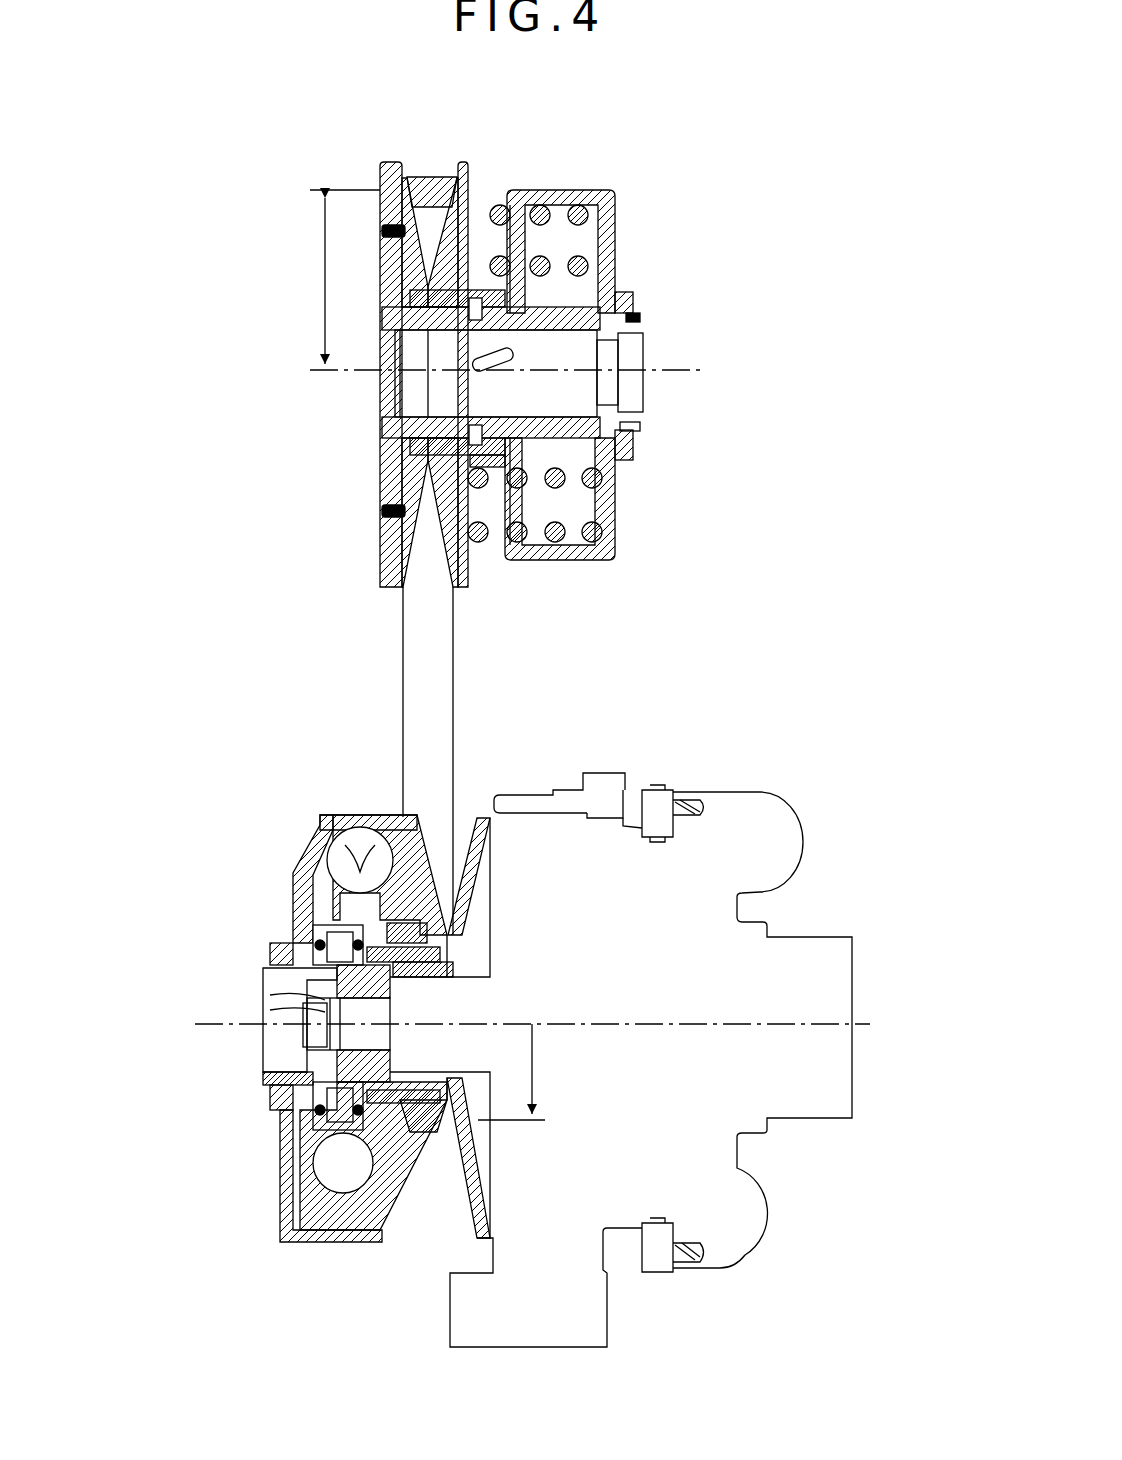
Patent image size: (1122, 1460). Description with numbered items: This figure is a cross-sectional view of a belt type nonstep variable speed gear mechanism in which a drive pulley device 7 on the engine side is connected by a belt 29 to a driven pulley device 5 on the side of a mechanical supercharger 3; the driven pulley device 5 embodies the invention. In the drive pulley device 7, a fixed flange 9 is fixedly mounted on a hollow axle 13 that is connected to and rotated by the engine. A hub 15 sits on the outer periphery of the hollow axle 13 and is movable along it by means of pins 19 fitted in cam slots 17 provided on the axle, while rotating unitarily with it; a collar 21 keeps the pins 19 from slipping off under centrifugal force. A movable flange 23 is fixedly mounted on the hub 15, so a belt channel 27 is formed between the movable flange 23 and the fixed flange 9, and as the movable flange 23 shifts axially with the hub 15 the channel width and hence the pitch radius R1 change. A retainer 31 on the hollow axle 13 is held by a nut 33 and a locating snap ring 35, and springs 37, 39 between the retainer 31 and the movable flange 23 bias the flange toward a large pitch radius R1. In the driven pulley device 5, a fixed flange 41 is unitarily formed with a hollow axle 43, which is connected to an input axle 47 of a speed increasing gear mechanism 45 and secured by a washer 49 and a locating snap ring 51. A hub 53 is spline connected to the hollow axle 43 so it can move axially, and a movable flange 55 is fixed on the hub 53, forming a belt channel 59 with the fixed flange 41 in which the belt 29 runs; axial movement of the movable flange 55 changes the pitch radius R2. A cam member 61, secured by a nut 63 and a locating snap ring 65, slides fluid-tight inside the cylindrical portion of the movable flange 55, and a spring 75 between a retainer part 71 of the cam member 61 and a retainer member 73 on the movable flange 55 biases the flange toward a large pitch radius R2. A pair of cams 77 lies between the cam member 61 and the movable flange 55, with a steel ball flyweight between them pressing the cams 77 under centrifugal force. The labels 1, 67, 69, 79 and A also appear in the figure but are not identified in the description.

The electromagnetic clutch (driving side) 1 is at (606, 349).
The supercharger 3 is at (651, 1017).
The driven pulley device 5 is at (356, 1045).
The drive pulley device 7 is at (400, 158).
The fixed flange 9 is at (386, 164).
The hollow axle 13 is at (562, 330).
The hub 15 is at (500, 430).
The cam slots 17 is at (480, 350).
The pins 19 is at (474, 426).
The collar 21 is at (506, 462).
The movable flange 23 is at (440, 205).
The belt channel 27 is at (450, 222).
The belt 29 is at (427, 180).
The retainer 31 is at (605, 200).
The nut 33 is at (627, 295).
The locating snap ring 35 is at (642, 318).
The spring 37 is at (540, 225).
The spring 39 is at (540, 274).
The fixed flange 41 is at (483, 810).
The hollow axle 43 is at (388, 985).
The speed increasing gear mechanism 45 is at (565, 775).
The input axle 47 is at (348, 1024).
The washer 49 is at (290, 996).
The locating snap ring 51 is at (290, 1026).
The hub 53 is at (392, 1075).
The movable flange 55 is at (396, 810).
The belt channel 59 is at (448, 1220).
The cam member 61 is at (300, 868).
The nut 63 is at (270, 1097).
The locating snap ring 65 is at (265, 1083).
The ball 67 is at (333, 1242).
The cover 69 is at (280, 1212).
The retainer part 71 is at (290, 945).
The retainer member 73 is at (430, 947).
The spring 75 is at (340, 925).
The cams 77 is at (360, 860).
The ring 79 is at (352, 815).
The region A is at (270, 1252).
The pitch radius R1 is at (332, 277).
The pitch radius R2 is at (524, 1072).